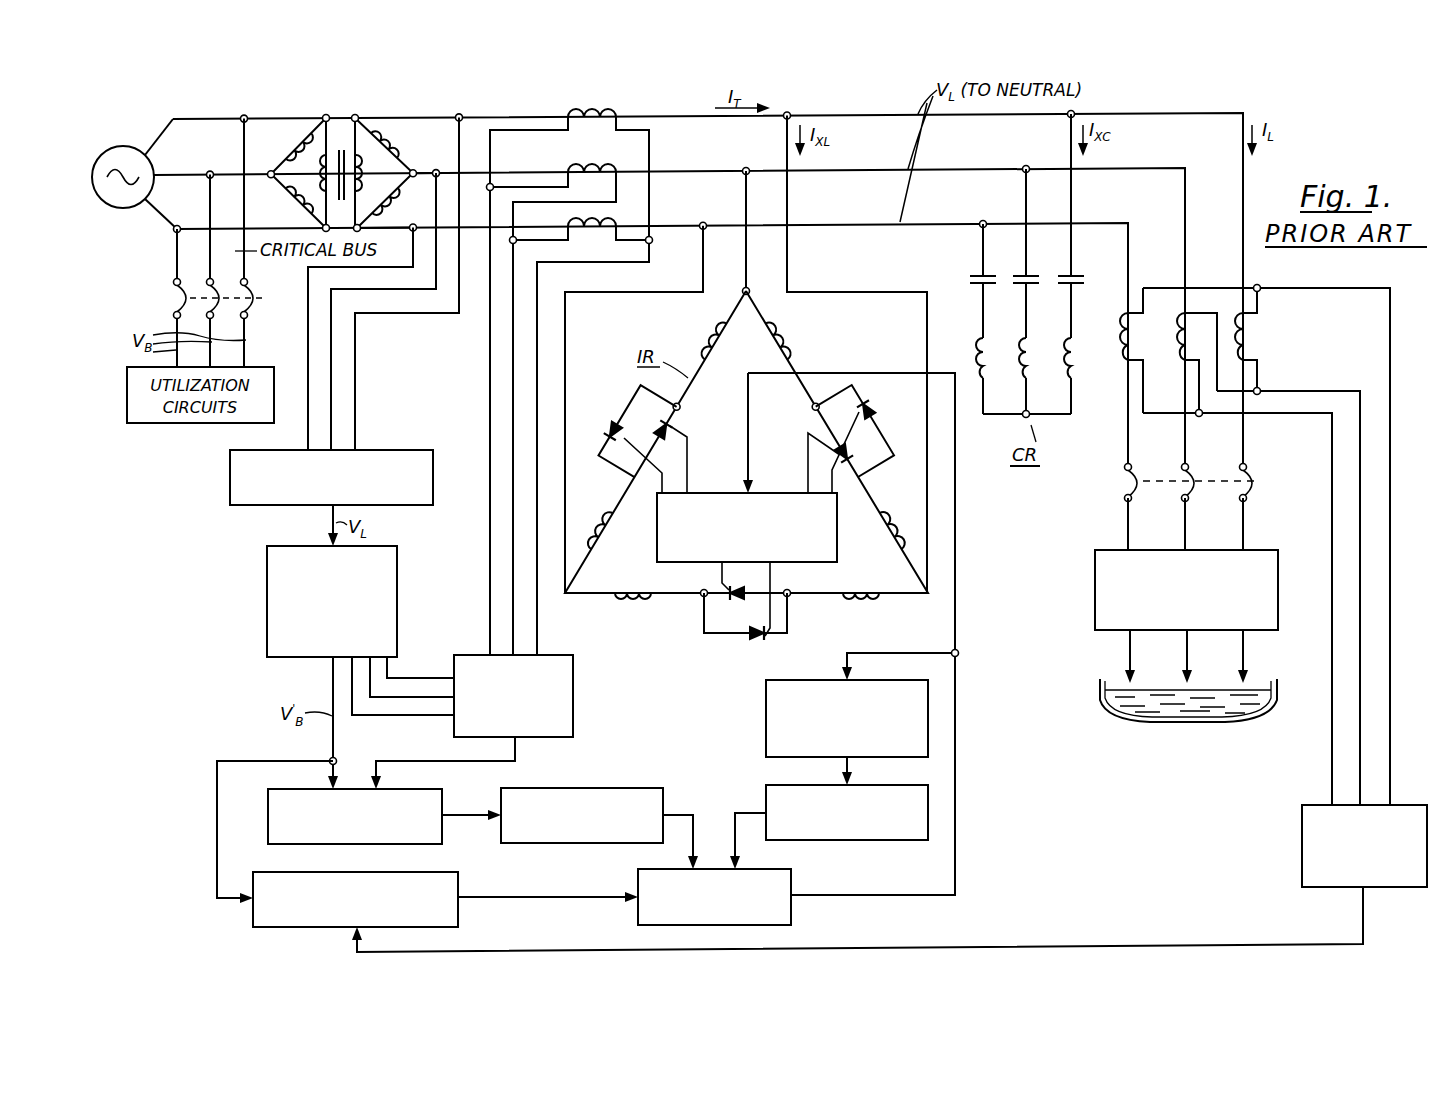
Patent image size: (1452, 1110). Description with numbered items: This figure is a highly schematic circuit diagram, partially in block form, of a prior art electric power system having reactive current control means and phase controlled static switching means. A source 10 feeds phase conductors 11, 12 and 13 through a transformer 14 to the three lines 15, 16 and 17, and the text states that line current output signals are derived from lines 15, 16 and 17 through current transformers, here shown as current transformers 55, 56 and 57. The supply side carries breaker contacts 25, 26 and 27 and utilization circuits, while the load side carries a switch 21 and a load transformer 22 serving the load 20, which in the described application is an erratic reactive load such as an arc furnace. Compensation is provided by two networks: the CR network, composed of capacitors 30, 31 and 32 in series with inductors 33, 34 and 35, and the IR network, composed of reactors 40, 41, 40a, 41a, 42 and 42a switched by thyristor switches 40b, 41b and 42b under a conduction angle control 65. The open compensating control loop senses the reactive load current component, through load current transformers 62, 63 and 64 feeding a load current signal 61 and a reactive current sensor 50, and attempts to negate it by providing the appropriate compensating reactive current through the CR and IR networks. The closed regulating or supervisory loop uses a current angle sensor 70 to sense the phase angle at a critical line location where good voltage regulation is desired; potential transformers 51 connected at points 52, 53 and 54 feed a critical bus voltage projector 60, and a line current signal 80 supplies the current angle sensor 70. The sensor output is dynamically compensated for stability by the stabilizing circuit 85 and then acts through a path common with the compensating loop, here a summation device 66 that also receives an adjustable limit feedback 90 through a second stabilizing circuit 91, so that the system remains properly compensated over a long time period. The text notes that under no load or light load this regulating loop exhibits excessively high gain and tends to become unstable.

The AC power source 10 is at (113, 150).
The phase conductor 11 is at (207, 118).
The phase conductor 12 is at (185, 174).
The phase conductor 13 is at (193, 228).
The transformer 14 is at (340, 132).
The line 15 is at (678, 116).
The line 16 is at (692, 170).
The line 17 is at (674, 224).
The load (arc furnace) 20 is at (1142, 725).
The load switch 21 is at (1121, 479).
The load transformer 22 is at (1095, 594).
The circuit breaker contact 25 is at (163, 268).
The circuit breaker contact 26 is at (211, 250).
The circuit breaker contact 27 is at (251, 272).
The capacitor 30 is at (990, 273).
The capacitor 31 is at (1033, 273).
The capacitor 32 is at (1079, 273).
The inductor 33 is at (978, 344).
The inductor 34 is at (1021, 344).
The inductor 35 is at (1067, 344).
The reactor 40 is at (704, 336).
The reactor 41 is at (786, 336).
The reactor 40a is at (604, 520).
The reactor 41a is at (898, 520).
The thyristor switch 40b is at (633, 417).
The thyristor switch 41b is at (876, 430).
The reactor 42 is at (636, 609).
The reactor 42a is at (861, 608).
The thyristor switch 42b is at (728, 638).
The reactive current sensor 50 is at (285, 930).
The potential transformers 51 is at (403, 449).
The potential transformer connection 52 is at (456, 114).
The potential transformer connection 53 is at (435, 171).
The potential transformer connection 54 is at (412, 224).
The current transformer 55 is at (568, 221).
The current transformer 56 is at (568, 167).
The current transformer 57 is at (568, 112).
The critical bus voltage projector 60 is at (267, 590).
The load current signal circuit 61 is at (1302, 847).
The load current transformer 62 is at (1118, 365).
The load current transformer 63 is at (1175, 365).
The load current transformer 64 is at (1253, 344).
The conduction angle control 65 is at (713, 492).
The summation device 66 is at (791, 918).
The current angle sensor 70 is at (268, 813).
The line current signal circuit 80 is at (575, 690).
The stabilizing circuit 85 is at (584, 787).
The adjustable limit feedback 90 is at (766, 717).
The stabilizing circuit 91 is at (766, 797).